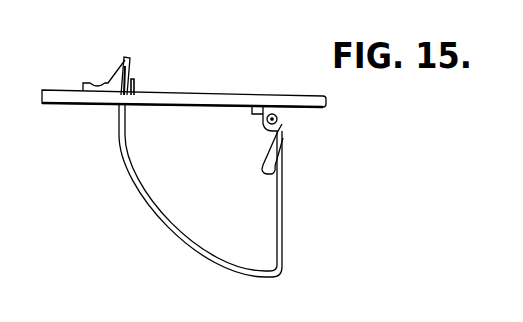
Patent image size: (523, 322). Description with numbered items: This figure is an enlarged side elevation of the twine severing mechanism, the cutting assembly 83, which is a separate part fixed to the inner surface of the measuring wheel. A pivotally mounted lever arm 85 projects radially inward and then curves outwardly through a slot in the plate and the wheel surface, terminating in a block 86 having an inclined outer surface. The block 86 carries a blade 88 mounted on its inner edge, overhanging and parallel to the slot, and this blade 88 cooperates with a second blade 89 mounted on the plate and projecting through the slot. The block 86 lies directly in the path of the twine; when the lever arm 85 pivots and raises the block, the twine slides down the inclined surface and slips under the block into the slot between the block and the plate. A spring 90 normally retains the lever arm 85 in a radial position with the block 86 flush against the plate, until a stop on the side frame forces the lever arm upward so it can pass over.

The cutting assembly 83 is at (264, 126).
The lever arm 85 is at (274, 230).
The block 86 is at (115, 62).
The blade 88 is at (130, 66).
The second blade 89 is at (137, 83).
The spring 90 is at (266, 172).